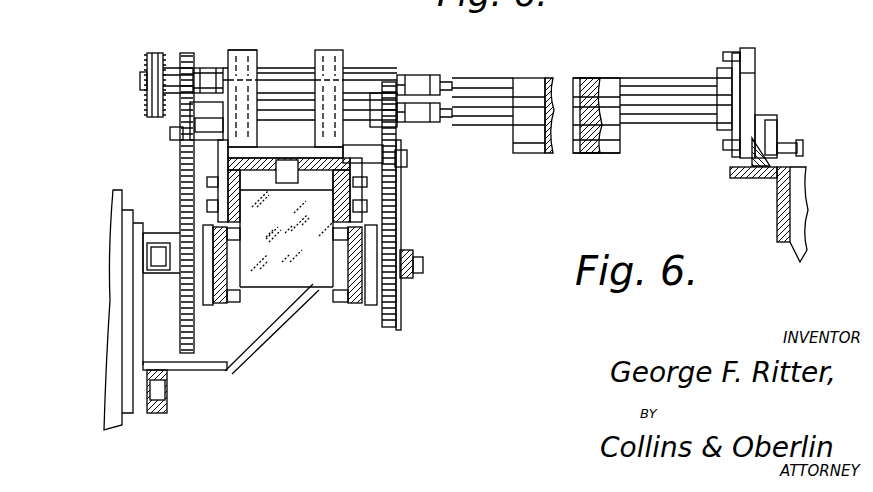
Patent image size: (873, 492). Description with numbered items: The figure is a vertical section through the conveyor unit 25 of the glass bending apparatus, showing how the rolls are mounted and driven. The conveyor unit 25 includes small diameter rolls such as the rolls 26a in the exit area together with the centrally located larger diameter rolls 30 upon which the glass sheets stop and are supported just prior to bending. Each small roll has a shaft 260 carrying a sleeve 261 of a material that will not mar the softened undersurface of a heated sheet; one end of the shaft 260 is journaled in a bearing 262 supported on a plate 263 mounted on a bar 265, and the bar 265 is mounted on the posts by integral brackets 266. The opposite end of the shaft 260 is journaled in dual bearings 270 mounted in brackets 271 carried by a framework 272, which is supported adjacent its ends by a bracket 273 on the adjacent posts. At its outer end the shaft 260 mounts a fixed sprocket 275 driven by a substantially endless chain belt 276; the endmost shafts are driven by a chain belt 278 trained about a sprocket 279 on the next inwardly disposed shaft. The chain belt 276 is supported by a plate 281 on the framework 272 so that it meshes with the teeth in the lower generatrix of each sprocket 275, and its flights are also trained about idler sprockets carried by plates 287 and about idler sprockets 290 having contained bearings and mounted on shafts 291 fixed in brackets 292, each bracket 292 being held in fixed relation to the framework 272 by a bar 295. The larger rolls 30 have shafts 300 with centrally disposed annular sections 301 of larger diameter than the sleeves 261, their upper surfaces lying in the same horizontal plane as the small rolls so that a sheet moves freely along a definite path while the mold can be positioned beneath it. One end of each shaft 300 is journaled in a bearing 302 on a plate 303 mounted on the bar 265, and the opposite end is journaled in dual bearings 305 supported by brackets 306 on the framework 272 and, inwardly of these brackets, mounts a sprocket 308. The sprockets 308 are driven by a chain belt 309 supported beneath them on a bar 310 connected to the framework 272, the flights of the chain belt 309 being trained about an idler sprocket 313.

The conveyor unit 25 is at (543, 157).
The rolls 26a is at (470, 76).
The rolls 30 is at (532, 156).
The shaft 260 is at (697, 84).
The sleeve 261 is at (655, 84).
The bearing 262 is at (735, 50).
The plate 263 is at (757, 60).
The bar 265 is at (763, 137).
The brackets 266 is at (777, 219).
The dual bearings 270 is at (250, 48).
The brackets 271 is at (237, 49).
The framework 272 is at (314, 309).
The bracket 273 is at (263, 312).
The sprocket 275 is at (205, 66).
The chain belt 276 is at (180, 172).
The chain belt 278 is at (147, 110).
The sprocket 279 is at (168, 65).
The plate 281 is at (170, 129).
The plates 287 is at (222, 160).
The idler sprockets 290 is at (150, 248).
The shafts 291 is at (150, 262).
The brackets 292 is at (208, 306).
The bar 295 is at (234, 304).
The shafts 300 is at (647, 118).
The annular sections 301 is at (600, 152).
The bearing 302 is at (727, 147).
The plate 303 is at (753, 95).
The dual bearings 305 is at (264, 72).
The brackets 306 is at (331, 96).
The sprocket 308 is at (407, 123).
The chain belt 309 is at (401, 202).
The bar 310 is at (400, 175).
The idler sprocket 313 is at (403, 246).